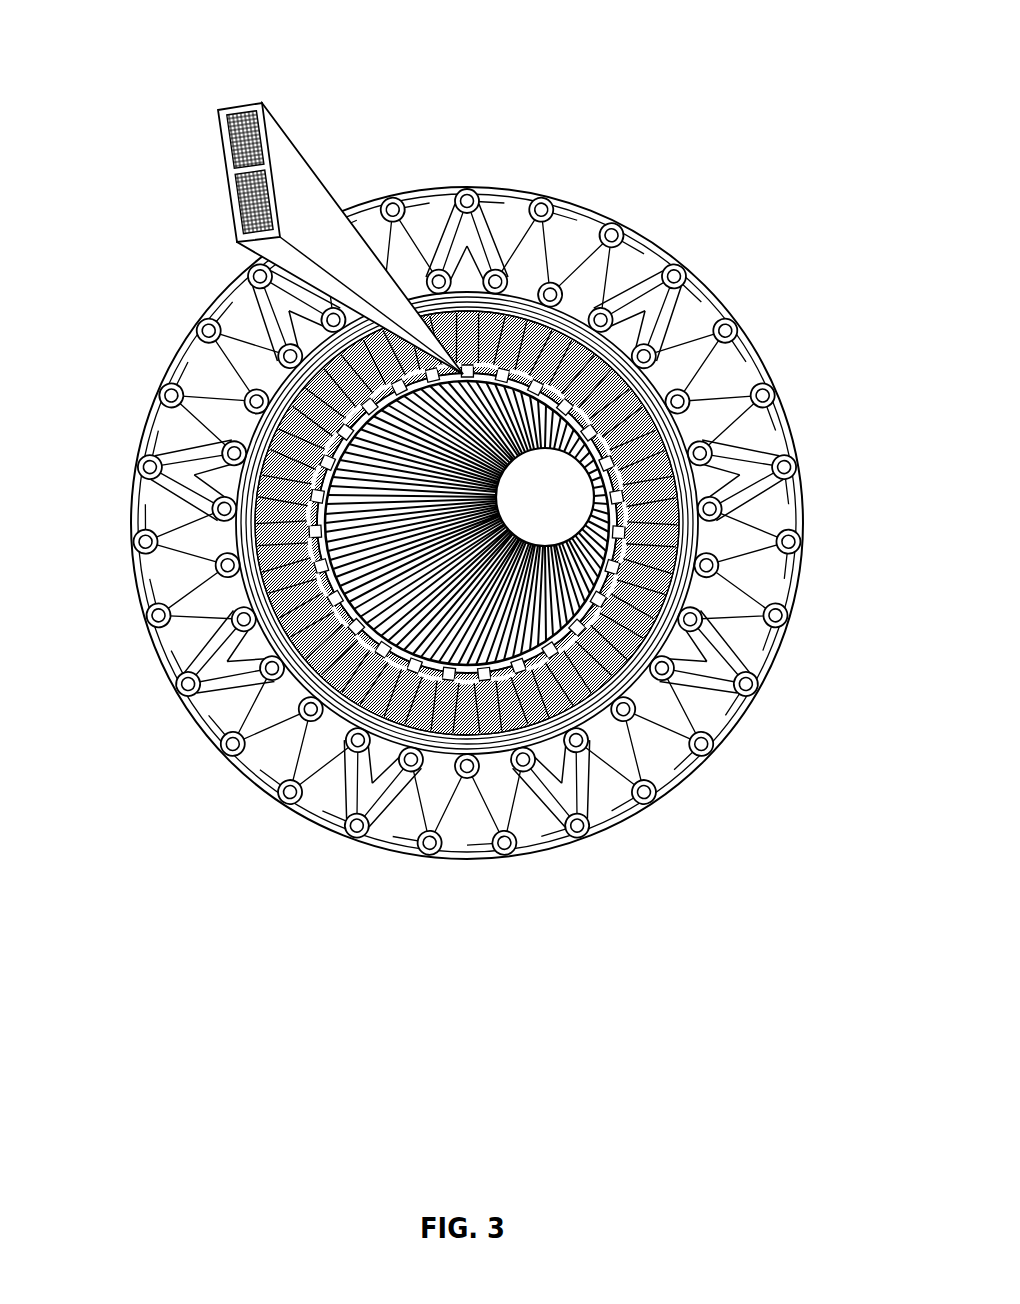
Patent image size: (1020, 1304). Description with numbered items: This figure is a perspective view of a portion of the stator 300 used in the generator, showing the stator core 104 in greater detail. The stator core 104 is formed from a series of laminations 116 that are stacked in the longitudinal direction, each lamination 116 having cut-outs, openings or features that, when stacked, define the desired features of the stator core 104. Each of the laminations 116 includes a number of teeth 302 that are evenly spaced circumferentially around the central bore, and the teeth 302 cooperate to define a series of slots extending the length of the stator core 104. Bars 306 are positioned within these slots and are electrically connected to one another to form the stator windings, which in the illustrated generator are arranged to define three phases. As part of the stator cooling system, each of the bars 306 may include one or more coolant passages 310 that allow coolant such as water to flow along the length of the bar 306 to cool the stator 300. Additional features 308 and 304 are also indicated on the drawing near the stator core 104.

The stator 300 is at (699, 60).
The coolant passages 310 is at (218, 137).
The bars 306 is at (302, 180).
The laminations 116 is at (692, 320).
The stator core 308 is at (258, 421).
The fasteners 304 is at (240, 611).
The teeth 302 is at (650, 712).
The stator core 104 is at (332, 795).